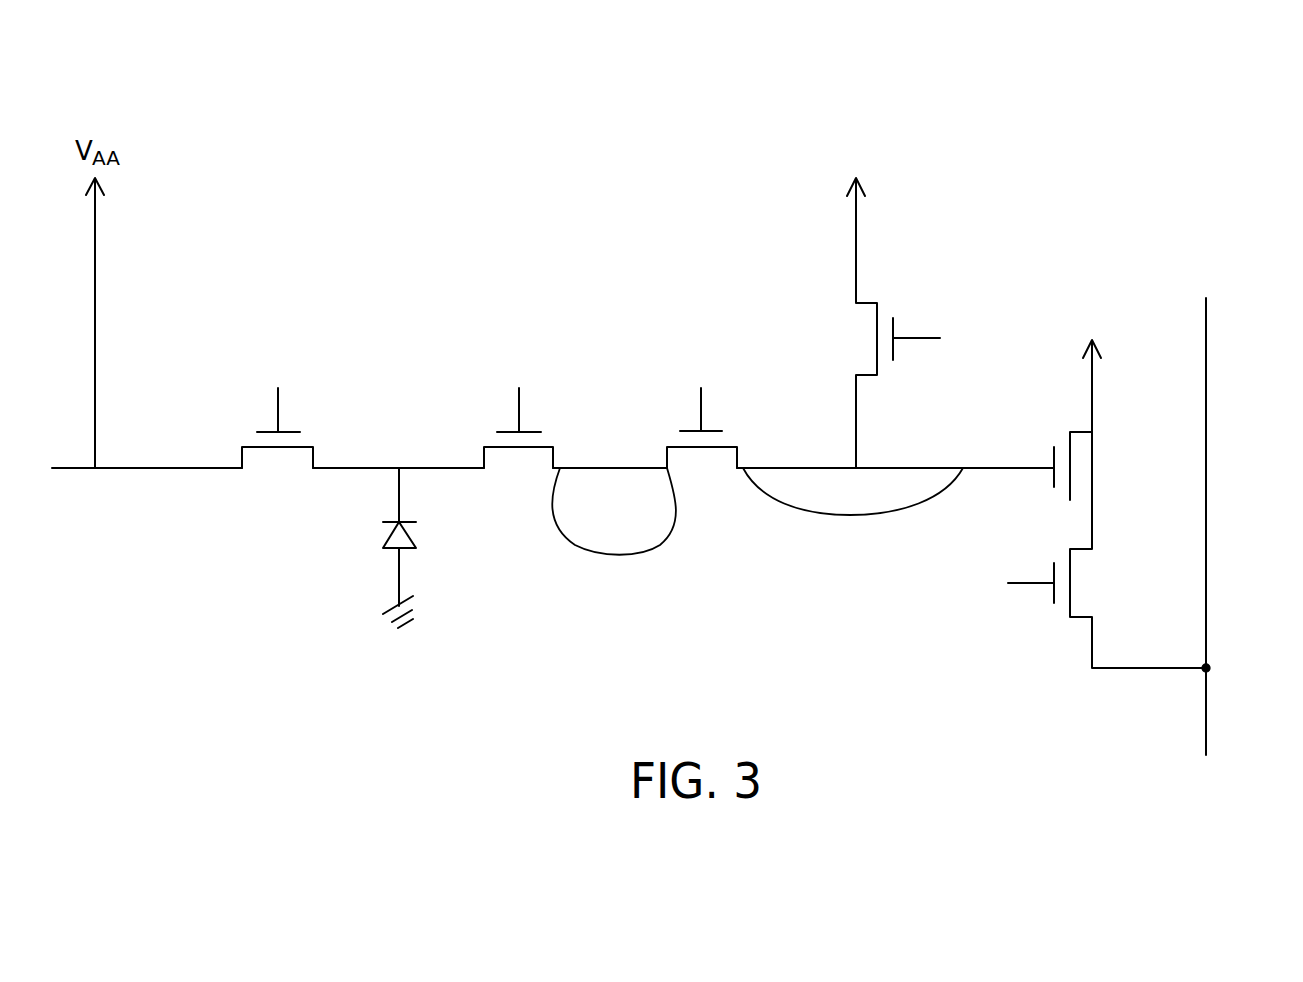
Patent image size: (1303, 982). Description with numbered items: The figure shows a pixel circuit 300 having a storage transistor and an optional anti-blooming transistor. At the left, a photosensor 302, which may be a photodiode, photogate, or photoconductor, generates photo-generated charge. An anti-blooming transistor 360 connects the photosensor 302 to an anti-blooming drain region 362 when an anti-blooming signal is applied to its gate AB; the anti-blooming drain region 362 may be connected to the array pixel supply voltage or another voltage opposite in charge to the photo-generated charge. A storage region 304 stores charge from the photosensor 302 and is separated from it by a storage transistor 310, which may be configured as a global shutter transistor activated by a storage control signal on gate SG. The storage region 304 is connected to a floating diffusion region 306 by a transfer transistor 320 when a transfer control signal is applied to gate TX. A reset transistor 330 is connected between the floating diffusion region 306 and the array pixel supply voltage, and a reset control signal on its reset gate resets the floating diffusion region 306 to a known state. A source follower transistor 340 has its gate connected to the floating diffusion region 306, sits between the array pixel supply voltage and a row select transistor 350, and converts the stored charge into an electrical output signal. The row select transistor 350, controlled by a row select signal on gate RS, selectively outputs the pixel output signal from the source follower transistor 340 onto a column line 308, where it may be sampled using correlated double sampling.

The pixel circuit 300 is at (1133, 165).
The photosensor 302 is at (395, 552).
The storage region 304 is at (615, 538).
The floating diffusion region 306 is at (843, 495).
The column line 308 is at (1207, 448).
The storage transistor 310 is at (525, 450).
The transfer transistor 320 is at (700, 450).
The reset transistor 330 is at (875, 333).
The source follower transistor 340 is at (1072, 478).
The row select transistor 350 is at (1072, 583).
The anti-blooming transistor 360 is at (280, 450).
The anti-blooming drain region 362 is at (217, 475).